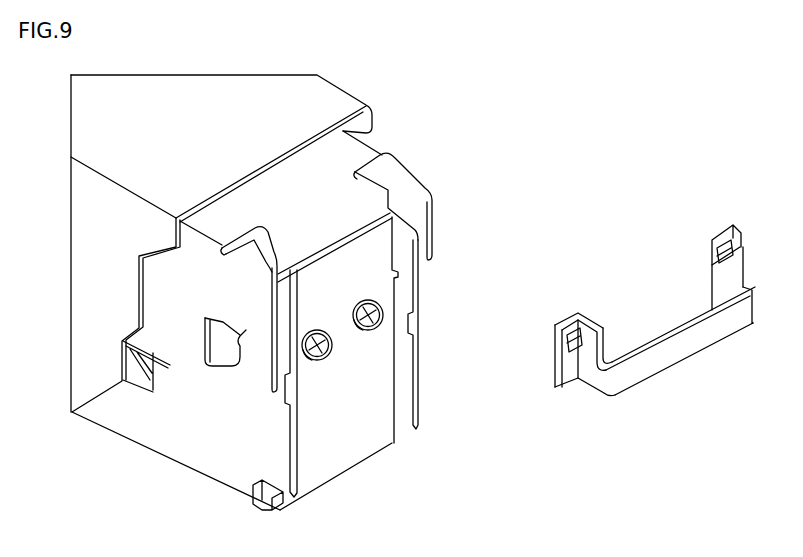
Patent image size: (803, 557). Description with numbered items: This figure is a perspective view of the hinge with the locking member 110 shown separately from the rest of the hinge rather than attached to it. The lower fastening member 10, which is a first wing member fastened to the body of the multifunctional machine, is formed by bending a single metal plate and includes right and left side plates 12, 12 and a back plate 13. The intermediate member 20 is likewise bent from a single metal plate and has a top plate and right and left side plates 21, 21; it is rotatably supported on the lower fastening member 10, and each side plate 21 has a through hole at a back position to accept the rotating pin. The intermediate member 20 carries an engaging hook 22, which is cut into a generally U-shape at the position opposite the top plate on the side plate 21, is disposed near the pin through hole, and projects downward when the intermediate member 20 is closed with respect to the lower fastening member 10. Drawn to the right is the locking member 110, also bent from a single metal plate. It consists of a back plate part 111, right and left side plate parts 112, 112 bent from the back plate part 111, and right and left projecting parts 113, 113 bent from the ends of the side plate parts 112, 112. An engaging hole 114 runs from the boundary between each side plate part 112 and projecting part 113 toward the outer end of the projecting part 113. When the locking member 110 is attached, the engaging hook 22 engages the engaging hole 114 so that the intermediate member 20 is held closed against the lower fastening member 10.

The lower fastening member 10 is at (288, 377).
The side plate 12 is at (420, 378).
The back plate 13 is at (368, 457).
The intermediate member 20 is at (425, 146).
The side plate 21 is at (427, 181).
The engaging hook 22 is at (240, 350).
The locking member 110 is at (625, 323).
The back plate part 111 is at (698, 350).
The side plate part 112 is at (590, 395).
The projecting part 113 is at (568, 318).
The engaging hole 114 is at (557, 346).